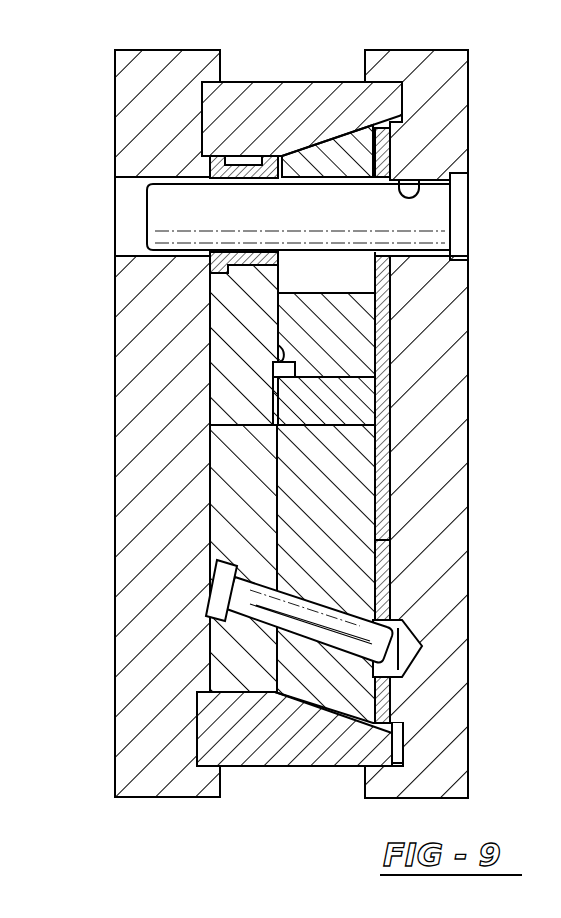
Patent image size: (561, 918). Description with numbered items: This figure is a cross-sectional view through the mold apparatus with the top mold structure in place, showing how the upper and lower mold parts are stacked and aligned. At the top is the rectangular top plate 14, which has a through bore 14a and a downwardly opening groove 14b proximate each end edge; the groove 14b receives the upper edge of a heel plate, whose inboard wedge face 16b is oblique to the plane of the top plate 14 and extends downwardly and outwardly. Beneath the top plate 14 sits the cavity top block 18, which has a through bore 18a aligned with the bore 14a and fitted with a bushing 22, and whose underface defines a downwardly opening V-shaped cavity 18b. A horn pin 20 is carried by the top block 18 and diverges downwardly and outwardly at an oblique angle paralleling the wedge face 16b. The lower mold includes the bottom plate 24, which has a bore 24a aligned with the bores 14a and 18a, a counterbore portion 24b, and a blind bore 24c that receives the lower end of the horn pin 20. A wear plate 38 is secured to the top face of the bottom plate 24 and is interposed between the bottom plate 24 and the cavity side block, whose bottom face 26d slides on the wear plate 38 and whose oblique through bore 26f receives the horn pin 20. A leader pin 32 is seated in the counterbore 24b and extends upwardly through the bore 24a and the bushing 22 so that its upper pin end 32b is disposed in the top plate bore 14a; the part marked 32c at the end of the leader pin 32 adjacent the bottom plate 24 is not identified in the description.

The top plate 14 is at (115, 615).
The through bore 14a is at (135, 252).
The downwardly opening groove 14b is at (207, 111).
The inboard wedge face 16b is at (305, 690).
The cavity top block 18 is at (222, 388).
The through bore 18a is at (280, 263).
The V-shaped cavity 18b is at (270, 356).
The horn pin 20 is at (342, 628).
The bushing 22 is at (212, 262).
The bottom plate 24 is at (470, 398).
The bore 24a is at (422, 180).
The counterbore portion 24b is at (466, 188).
The blind bore 24c is at (424, 650).
The bottom face 26d is at (392, 578).
The oblique through bore 26f is at (268, 622).
The leader pin 32 is at (304, 225).
The upper pin end 32b is at (150, 200).
The shaft end disc 32c is at (463, 243).
The wear plate 38 is at (392, 513).